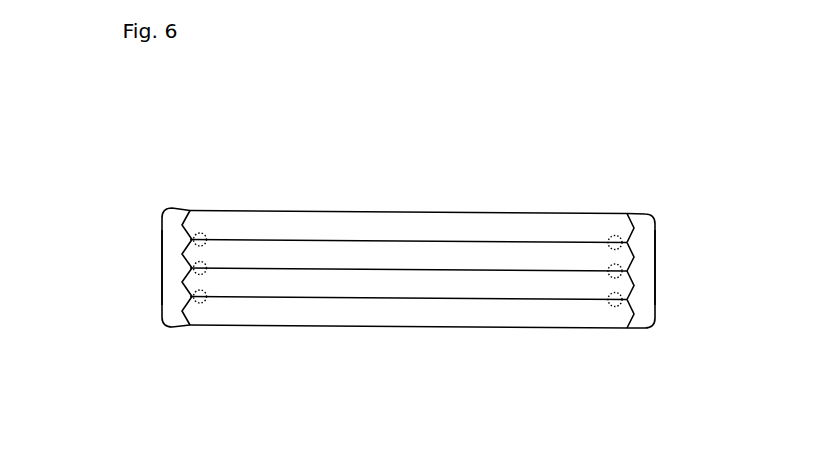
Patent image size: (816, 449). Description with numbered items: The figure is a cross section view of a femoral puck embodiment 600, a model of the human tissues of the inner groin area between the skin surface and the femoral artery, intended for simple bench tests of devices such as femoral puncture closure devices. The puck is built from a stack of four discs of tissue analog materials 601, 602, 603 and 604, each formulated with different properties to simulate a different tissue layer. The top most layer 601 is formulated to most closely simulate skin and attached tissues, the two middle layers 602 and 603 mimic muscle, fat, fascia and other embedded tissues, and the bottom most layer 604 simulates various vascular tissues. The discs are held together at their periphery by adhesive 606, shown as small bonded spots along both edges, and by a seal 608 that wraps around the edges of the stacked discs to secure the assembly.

The femoral puck embodiment 600 is at (390, 132).
The top most layer 601 is at (408, 177).
The middle layer 602 is at (419, 200).
The middle layer 603 is at (377, 340).
The bottom most layer 604 is at (408, 363).
The adhesive 606 is at (425, 216).
The seal 608 is at (415, 267).